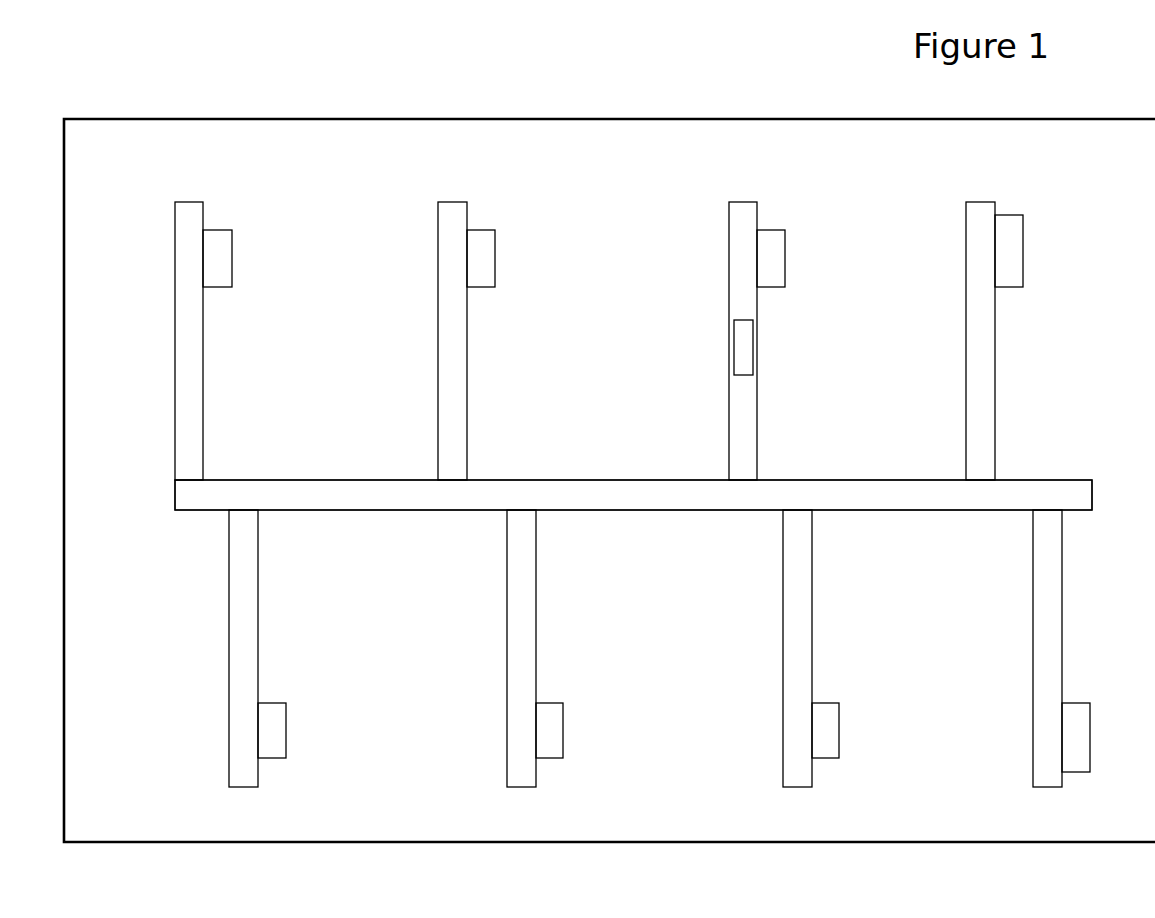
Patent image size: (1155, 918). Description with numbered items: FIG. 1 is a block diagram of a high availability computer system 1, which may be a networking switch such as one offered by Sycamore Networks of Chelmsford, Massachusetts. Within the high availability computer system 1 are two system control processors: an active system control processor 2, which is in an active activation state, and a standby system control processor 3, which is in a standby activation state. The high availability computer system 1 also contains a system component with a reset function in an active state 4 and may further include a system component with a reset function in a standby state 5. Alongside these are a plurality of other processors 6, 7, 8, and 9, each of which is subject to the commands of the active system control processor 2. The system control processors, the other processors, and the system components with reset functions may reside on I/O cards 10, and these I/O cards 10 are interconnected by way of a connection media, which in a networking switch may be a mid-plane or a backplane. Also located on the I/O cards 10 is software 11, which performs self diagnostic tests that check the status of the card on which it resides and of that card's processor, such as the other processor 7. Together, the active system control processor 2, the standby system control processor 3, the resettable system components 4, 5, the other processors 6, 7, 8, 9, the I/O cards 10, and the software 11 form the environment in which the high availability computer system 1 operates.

The high availability computer system 1 is at (148, 132).
The active system control processor 2 is at (219, 230).
The standby system control processor 3 is at (270, 703).
The system component with reset function in active state 4 is at (1005, 215).
The system component with reset function in standby state 5 is at (1075, 703).
The other processor 6 is at (481, 230).
The other processor 7 is at (770, 230).
The other processor 8 is at (548, 703).
The other processor 9 is at (823, 703).
The I/O card 10 is at (453, 452).
The software 11 is at (748, 330).